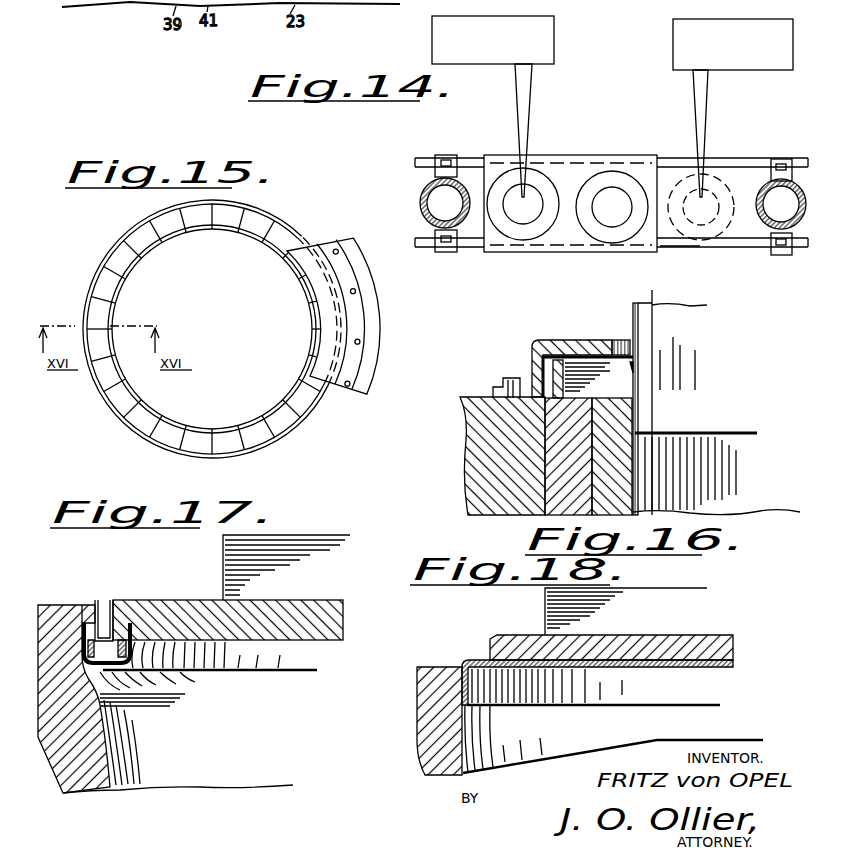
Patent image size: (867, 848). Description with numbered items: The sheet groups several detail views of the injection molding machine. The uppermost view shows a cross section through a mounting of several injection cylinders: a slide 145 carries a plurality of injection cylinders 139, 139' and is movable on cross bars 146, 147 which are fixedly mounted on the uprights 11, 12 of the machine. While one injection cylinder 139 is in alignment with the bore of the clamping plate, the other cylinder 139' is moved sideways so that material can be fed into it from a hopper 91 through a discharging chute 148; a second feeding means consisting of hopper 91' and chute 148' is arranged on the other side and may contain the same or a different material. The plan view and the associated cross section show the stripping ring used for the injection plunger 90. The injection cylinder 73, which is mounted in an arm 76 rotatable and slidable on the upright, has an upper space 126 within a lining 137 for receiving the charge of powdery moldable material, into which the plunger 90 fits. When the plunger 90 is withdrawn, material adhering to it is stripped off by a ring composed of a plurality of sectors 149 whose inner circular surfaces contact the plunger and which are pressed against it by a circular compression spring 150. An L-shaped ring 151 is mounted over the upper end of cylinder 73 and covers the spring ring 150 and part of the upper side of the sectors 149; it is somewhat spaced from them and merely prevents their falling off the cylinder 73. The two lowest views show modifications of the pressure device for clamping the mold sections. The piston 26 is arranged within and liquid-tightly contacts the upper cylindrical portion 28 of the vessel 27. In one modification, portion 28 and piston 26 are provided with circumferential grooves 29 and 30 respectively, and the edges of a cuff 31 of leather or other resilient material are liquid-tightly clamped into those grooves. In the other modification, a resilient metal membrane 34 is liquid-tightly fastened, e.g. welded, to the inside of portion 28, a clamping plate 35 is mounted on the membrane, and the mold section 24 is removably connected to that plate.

In FIG. 14, the hopper 91 is at (508, 40).
In FIG. 14, the second hopper 91' is at (715, 44).
In FIG. 14, the discharging chute 148 is at (546, 130).
In FIG. 14, the second discharging chute 148' is at (678, 133).
In FIG. 14, the slide 145 is at (580, 175).
In FIG. 14, the cross bar 146 is at (730, 166).
In FIG. 14, the cross bar 147 is at (672, 247).
In FIG. 14, the injection cylinder 139 is at (666, 223).
In FIG. 14, the injection cylinder 139' is at (523, 221).
In FIG. 14, the upright 11 is at (425, 192).
In FIG. 14, the upright 12 is at (762, 233).
In FIG. 15, the sectors 149 is at (224, 329).
In FIG. 16, the sectors 149 is at (540, 365).
In FIG. 15, the circular compression spring 150 is at (212, 330).
In FIG. 16, the circular compression spring 150 is at (553, 370).
In FIG. 15, the L-shaped ring 151 is at (333, 302).
In FIG. 16, the L-shaped ring 151 is at (543, 347).
In FIG. 15, the arm 76 is at (372, 314).
In FIG. 16, the arm 76 is at (470, 427).
In FIG. 16, the injection cylinder 73 is at (553, 503).
In FIG. 16, the lining 137 is at (617, 430).
In FIG. 16, the injection plunger 90 is at (657, 322).
In FIG. 16, the upper space 126 is at (743, 500).
In FIG. 17, the upper cylindrical portion 28 is at (47, 755).
In FIG. 18, the upper cylindrical portion 28 is at (467, 710).
In FIG. 17, the circumferential groove 29 is at (80, 623).
In FIG. 17, the circumferential groove 30 is at (131, 627).
In FIG. 17, the cuff 31 is at (108, 600).
In FIG. 17, the piston 26 is at (190, 608).
In FIG. 17, the mold section 24 is at (222, 550).
In FIG. 18, the mold section 24 is at (545, 603).
In FIG. 17, the vessel 27 is at (103, 775).
In FIG. 18, the vessel 27 is at (417, 760).
In FIG. 18, the resilient metal membrane 34 is at (464, 662).
In FIG. 18, the clamping plate 35 is at (500, 638).